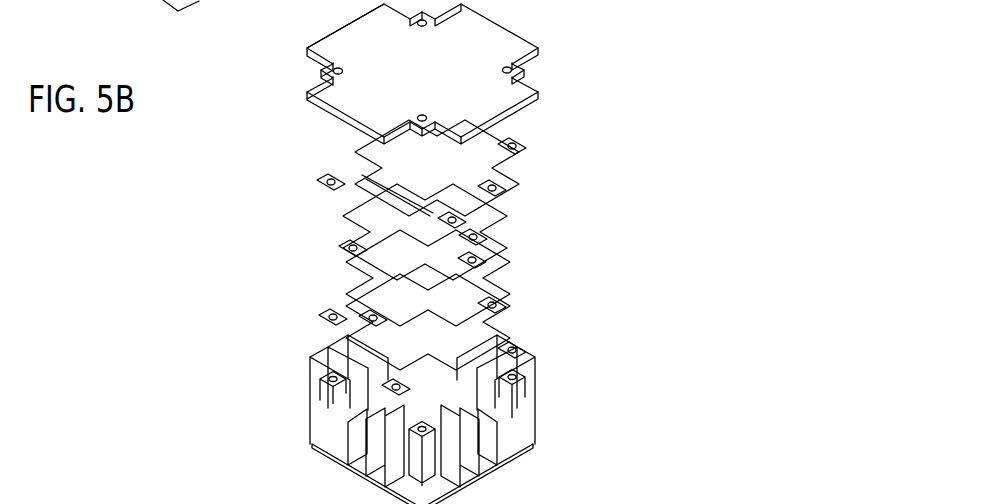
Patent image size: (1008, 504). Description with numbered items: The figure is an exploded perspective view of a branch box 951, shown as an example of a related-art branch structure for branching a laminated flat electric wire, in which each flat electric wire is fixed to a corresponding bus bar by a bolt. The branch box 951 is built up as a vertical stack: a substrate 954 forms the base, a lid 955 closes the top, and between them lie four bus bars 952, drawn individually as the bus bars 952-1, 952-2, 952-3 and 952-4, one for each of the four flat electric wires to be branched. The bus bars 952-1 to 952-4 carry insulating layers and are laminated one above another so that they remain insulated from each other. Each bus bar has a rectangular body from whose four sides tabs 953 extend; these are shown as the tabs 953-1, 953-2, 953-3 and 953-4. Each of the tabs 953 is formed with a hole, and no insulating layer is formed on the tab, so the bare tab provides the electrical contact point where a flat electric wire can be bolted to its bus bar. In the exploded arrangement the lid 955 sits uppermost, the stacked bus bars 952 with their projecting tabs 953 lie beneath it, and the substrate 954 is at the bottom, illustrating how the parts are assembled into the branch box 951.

The branch box 951 is at (238, 97).
The bus bars 952 is at (697, 125).
The bus bar 952-1 is at (513, 128).
The bus bar 952-2 is at (467, 225).
The bus bar 952-3 is at (470, 282).
The bus bar 952-4 is at (467, 336).
The tabs 953 is at (128, 150).
The tab 953-1 is at (348, 175).
The tab 953-2 is at (348, 247).
The tab 953-3 is at (335, 314).
The tab 953-4 is at (333, 322).
The substrate 954 is at (535, 455).
The lid 955 is at (538, 49).